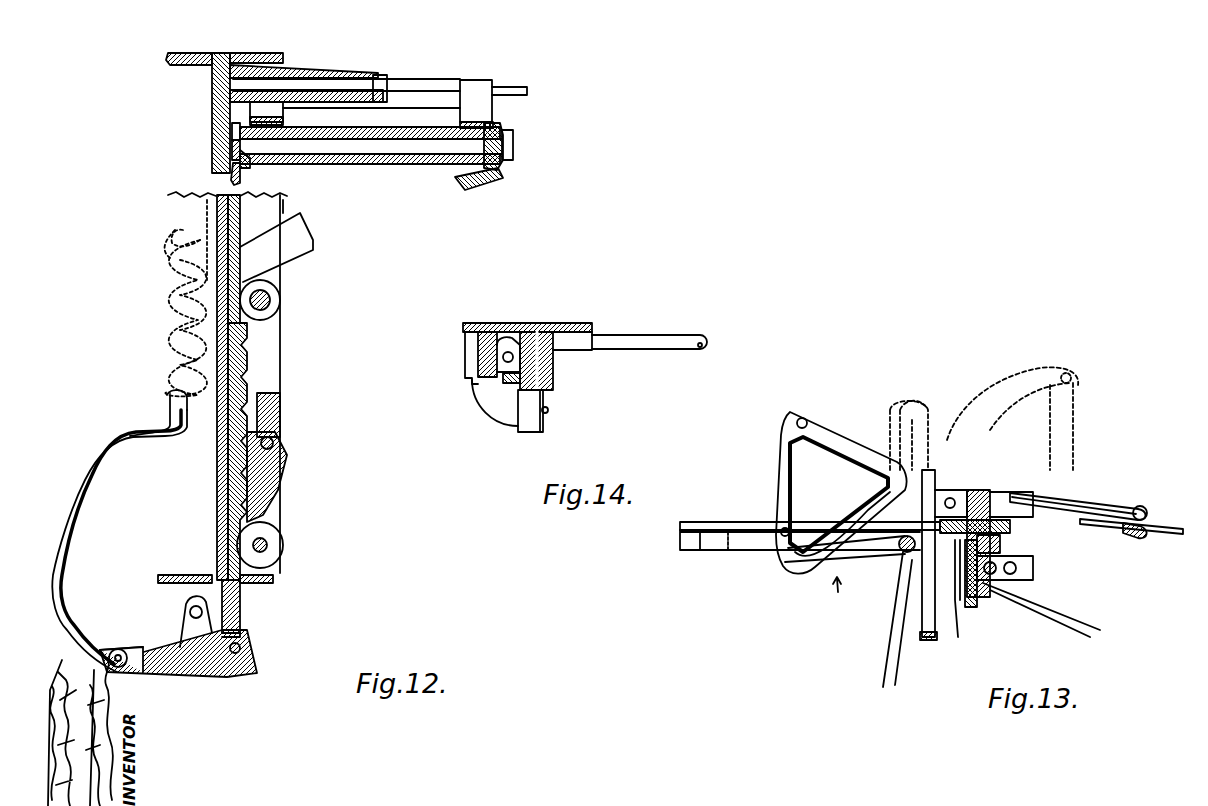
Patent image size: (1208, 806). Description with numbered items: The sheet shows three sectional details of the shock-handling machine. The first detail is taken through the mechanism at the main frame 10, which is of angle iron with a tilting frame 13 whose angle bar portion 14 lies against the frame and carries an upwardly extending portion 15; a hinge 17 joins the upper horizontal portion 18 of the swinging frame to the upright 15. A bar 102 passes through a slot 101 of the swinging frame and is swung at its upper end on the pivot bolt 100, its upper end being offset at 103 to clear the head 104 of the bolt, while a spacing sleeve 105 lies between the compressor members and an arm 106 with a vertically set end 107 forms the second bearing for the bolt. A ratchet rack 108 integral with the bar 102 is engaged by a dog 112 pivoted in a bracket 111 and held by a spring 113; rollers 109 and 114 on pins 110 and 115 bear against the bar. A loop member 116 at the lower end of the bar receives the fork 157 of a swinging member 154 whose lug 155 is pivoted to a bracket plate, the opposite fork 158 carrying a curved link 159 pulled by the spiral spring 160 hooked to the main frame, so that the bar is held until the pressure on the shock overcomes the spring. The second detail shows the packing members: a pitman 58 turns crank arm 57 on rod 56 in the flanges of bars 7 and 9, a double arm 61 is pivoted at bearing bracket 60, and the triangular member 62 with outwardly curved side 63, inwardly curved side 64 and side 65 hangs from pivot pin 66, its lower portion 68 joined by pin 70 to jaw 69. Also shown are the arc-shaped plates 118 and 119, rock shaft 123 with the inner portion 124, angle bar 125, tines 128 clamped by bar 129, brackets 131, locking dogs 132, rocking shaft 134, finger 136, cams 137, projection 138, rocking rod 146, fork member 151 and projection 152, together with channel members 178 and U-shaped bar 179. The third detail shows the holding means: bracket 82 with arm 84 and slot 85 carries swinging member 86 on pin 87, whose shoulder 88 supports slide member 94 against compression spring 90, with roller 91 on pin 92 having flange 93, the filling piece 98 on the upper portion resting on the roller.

In FIG. 13, the bar 7 is at (690, 540).
In FIG. 13, the bar 9 is at (727, 550).
In FIG. 12, the frame 10 is at (160, 578).
In FIG. 12, the tilting frame 13 is at (275, 580).
In FIG. 13, the tilting frame 13 is at (985, 520).
In FIG. 12, the angle bar portion 14 is at (270, 586).
In FIG. 13, the angle bar portion 14 is at (978, 520).
In FIG. 12, the upwardly extending portion 15 is at (215, 440).
In FIG. 12, the hinge 17 is at (372, 88).
In FIG. 14, the upper horizontal portion 18 is at (540, 330).
In FIG. 13, the rod 56 is at (908, 575).
In FIG. 13, the crank arm 57 is at (900, 630).
In FIG. 13, the pitman 58 is at (905, 552).
In FIG. 13, the bearing bracket 60 is at (943, 555).
In FIG. 13, the double arm 61 is at (839, 494).
In FIG. 13, the triangular member 62 is at (842, 437).
In FIG. 13, the side 63 is at (778, 500).
In FIG. 13, the side 64 is at (840, 500).
In FIG. 13, the side 65 is at (857, 445).
In FIG. 13, the pivot pin 66 is at (803, 417).
In FIG. 13, the upwardly curved portion 68 is at (805, 574).
In FIG. 13, the jaw portion 69 is at (778, 560).
In FIG. 13, the pin 70 is at (782, 530).
In FIG. 14, the bracket 82 is at (474, 388).
In FIG. 14, the arm 84 is at (468, 355).
In FIG. 14, the open ended slot 85 is at (465, 340).
In FIG. 14, the swinging member 86 is at (488, 410).
In FIG. 14, the pin 87 is at (512, 340).
In FIG. 14, the shoulder 88 is at (501, 372).
In FIG. 14, the compression spring 90 is at (553, 377).
In FIG. 14, the roller 91 is at (531, 432).
In FIG. 14, the pin 92 is at (549, 410).
In FIG. 14, the flange 93 is at (545, 428).
In FIG. 14, the slide member 94 is at (498, 326).
In FIG. 14, the filling piece 98 is at (538, 328).
In FIG. 12, the pivot bolt 100 is at (515, 143).
In FIG. 12, the slot 101 is at (245, 592).
In FIG. 12, the bar 102 is at (247, 332).
In FIG. 12, the offset 103 is at (246, 166).
In FIG. 12, the head 104 is at (232, 147).
In FIG. 14, the head 104 is at (486, 323).
In FIG. 12, the spacing sleeve 105 is at (462, 172).
In FIG. 12, the arm 106 is at (300, 245).
In FIG. 12, the vertically set end 107 is at (503, 167).
In FIG. 12, the ratchet rack 108 is at (248, 372).
In FIG. 12, the roller 109 is at (281, 302).
In FIG. 12, the pin 110 is at (268, 296).
In FIG. 12, the bracket 111 is at (279, 410).
In FIG. 12, the dog 112 is at (270, 448).
In FIG. 12, the spring 113 is at (274, 462).
In FIG. 12, the roller 114 is at (279, 541).
In FIG. 12, the pin 115 is at (263, 548).
In FIG. 12, the loop member 116 is at (241, 634).
In FIG. 13, the arc-shaped plate 118 is at (975, 606).
In FIG. 13, the arc-shaped plate 119 is at (1005, 595).
In FIG. 13, the rock shaft 123 is at (1147, 511).
In FIG. 13, the inner portion 124 is at (1100, 497).
In FIG. 13, the angle bar portion 125 is at (1010, 495).
In FIG. 13, the tines 128 is at (1180, 535).
In FIG. 13, the bar 129 is at (1020, 495).
In FIG. 13, the brackets 131 is at (1010, 540).
In FIG. 13, the locking dogs 132 is at (1124, 547).
In FIG. 13, the rocking shaft 134 is at (1005, 560).
In FIG. 13, the finger 136 is at (1033, 576).
In FIG. 13, the cams 137 is at (1025, 509).
In FIG. 13, the projection 138 is at (940, 567).
In FIG. 13, the rocking rod 146 is at (1060, 615).
In FIG. 13, the fork member 151 is at (1047, 606).
In FIG. 13, the projection 152 is at (962, 637).
In FIG. 12, the swinging member 154 is at (176, 680).
In FIG. 12, the lug 155 is at (186, 626).
In FIG. 12, the fork 157 is at (241, 652).
In FIG. 12, the fork 158 is at (112, 642).
In FIG. 12, the curved link 159 is at (72, 600).
In FIG. 12, the spiral spring 160 is at (160, 360).
In FIG. 13, the channel member 178 is at (886, 688).
In FIG. 13, the U-shaped bar member 179 is at (898, 690).